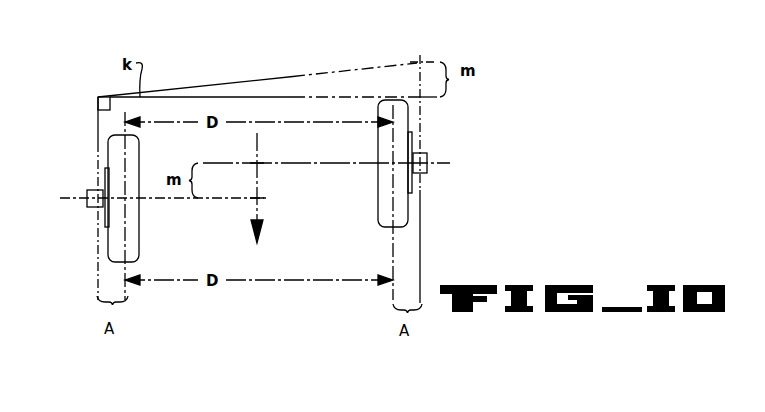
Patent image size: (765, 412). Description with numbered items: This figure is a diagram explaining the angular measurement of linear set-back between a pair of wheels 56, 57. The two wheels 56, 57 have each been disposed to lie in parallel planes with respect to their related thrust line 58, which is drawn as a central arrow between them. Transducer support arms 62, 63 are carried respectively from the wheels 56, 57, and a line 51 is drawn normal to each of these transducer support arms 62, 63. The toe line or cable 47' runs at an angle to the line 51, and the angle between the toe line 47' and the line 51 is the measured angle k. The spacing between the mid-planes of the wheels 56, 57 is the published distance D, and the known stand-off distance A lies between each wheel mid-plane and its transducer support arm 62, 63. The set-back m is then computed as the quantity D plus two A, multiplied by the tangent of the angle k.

The toe line or cable 47' is at (257, 58).
The line normal to the transducer support arms 51 is at (280, 97).
The wheel 56 is at (134, 250).
The wheel 57 is at (384, 215).
The thrust line 58 is at (259, 188).
The transducer support arm 62 is at (98, 127).
The transducer support arm 63 is at (422, 117).